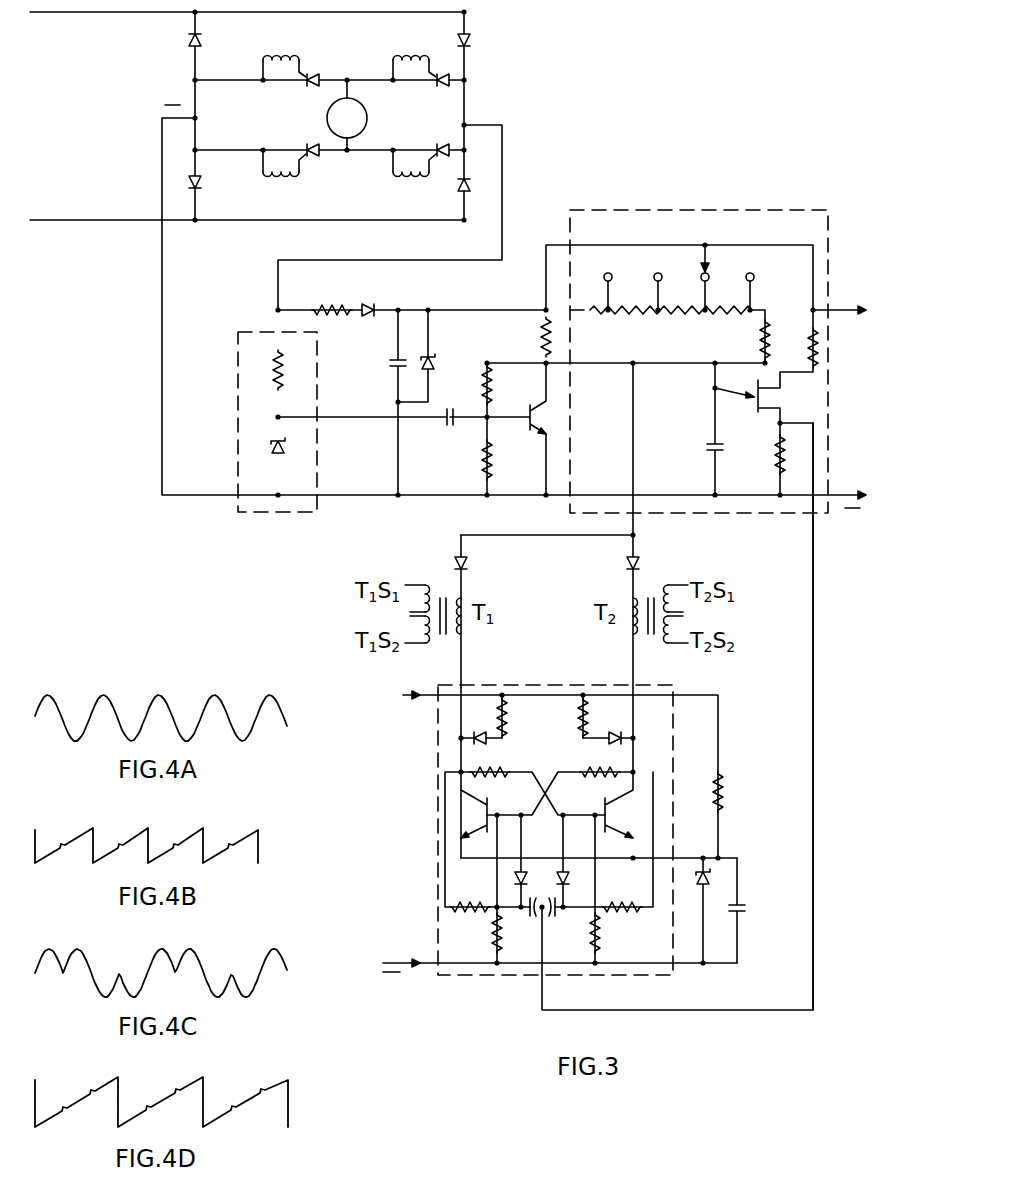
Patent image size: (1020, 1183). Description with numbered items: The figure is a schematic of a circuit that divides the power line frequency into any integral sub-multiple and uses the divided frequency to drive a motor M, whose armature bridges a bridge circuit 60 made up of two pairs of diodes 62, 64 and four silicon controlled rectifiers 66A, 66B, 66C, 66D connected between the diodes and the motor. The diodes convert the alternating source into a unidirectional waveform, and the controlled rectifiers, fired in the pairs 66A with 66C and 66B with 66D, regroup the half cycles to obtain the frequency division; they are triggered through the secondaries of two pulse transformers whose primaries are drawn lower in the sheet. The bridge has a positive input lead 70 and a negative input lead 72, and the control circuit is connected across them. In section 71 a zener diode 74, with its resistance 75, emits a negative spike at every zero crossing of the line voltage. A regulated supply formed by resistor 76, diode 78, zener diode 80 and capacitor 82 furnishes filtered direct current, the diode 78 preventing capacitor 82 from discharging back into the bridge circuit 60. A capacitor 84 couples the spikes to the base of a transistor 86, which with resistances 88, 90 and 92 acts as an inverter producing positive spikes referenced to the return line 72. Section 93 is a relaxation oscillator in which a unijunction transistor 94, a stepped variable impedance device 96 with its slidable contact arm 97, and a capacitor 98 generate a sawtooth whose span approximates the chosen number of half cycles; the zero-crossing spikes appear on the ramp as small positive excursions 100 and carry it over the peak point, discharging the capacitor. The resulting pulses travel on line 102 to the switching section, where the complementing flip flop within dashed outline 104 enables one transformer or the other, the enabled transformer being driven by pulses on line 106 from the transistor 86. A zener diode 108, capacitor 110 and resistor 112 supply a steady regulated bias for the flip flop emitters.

In FIG. 3, the bridge circuit 60 is at (170, 70).
In FIG. 3, the diodes 62 is at (187, 43).
In FIG. 3, the diodes 64 is at (203, 182).
In FIG. 3, the silicon controlled rectifier 66A is at (320, 87).
In FIG. 3, the silicon controlled rectifier 66B is at (449, 88).
In FIG. 3, the silicon controlled rectifier 66C is at (442, 144).
In FIG. 3, the silicon controlled rectifier 66D is at (318, 144).
In FIG. 3, the input lead 70 is at (434, 268).
In FIG. 3, the section 71 is at (252, 514).
In FIG. 3, the input lead 72 is at (160, 272).
In FIG. 3, the zener diode 74 is at (288, 449).
In FIG. 3, the resistance 75 is at (283, 374).
In FIG. 3, the resistor 76 is at (332, 305).
In FIG. 3, the diode 78 is at (370, 305).
In FIG. 3, the zener diode 80 is at (434, 360).
In FIG. 3, the capacitor 82 is at (398, 357).
In FIG. 3, the capacitor 84 is at (448, 428).
In FIG. 3, the transistor 86 is at (544, 438).
In FIG. 3, the resistance 88 is at (484, 383).
In FIG. 3, the resistance 90 is at (484, 466).
In FIG. 3, the resistance 92 is at (542, 340).
In FIG. 3, the section 93 is at (685, 210).
In FIG. 3, the unijunction transistor 94 is at (790, 397).
In FIG. 3, the variable impedance device 96 is at (670, 321).
In FIG. 3, the slidable contact arm 97 is at (702, 246).
In FIG. 3, the capacitor 98 is at (710, 445).
In FIG. 4B, the positive excursions 100 is at (232, 846).
In FIG. 4D, the positive excursions 100 is at (258, 1094).
In FIG. 3, the line 102 is at (815, 722).
In FIG. 3, the dashed outline 104 is at (435, 798).
In FIG. 3, the line 106 is at (638, 536).
In FIG. 3, the zener diode 108 is at (712, 878).
In FIG. 3, the capacitor 110 is at (740, 918).
In FIG. 3, the resistor 112 is at (722, 803).